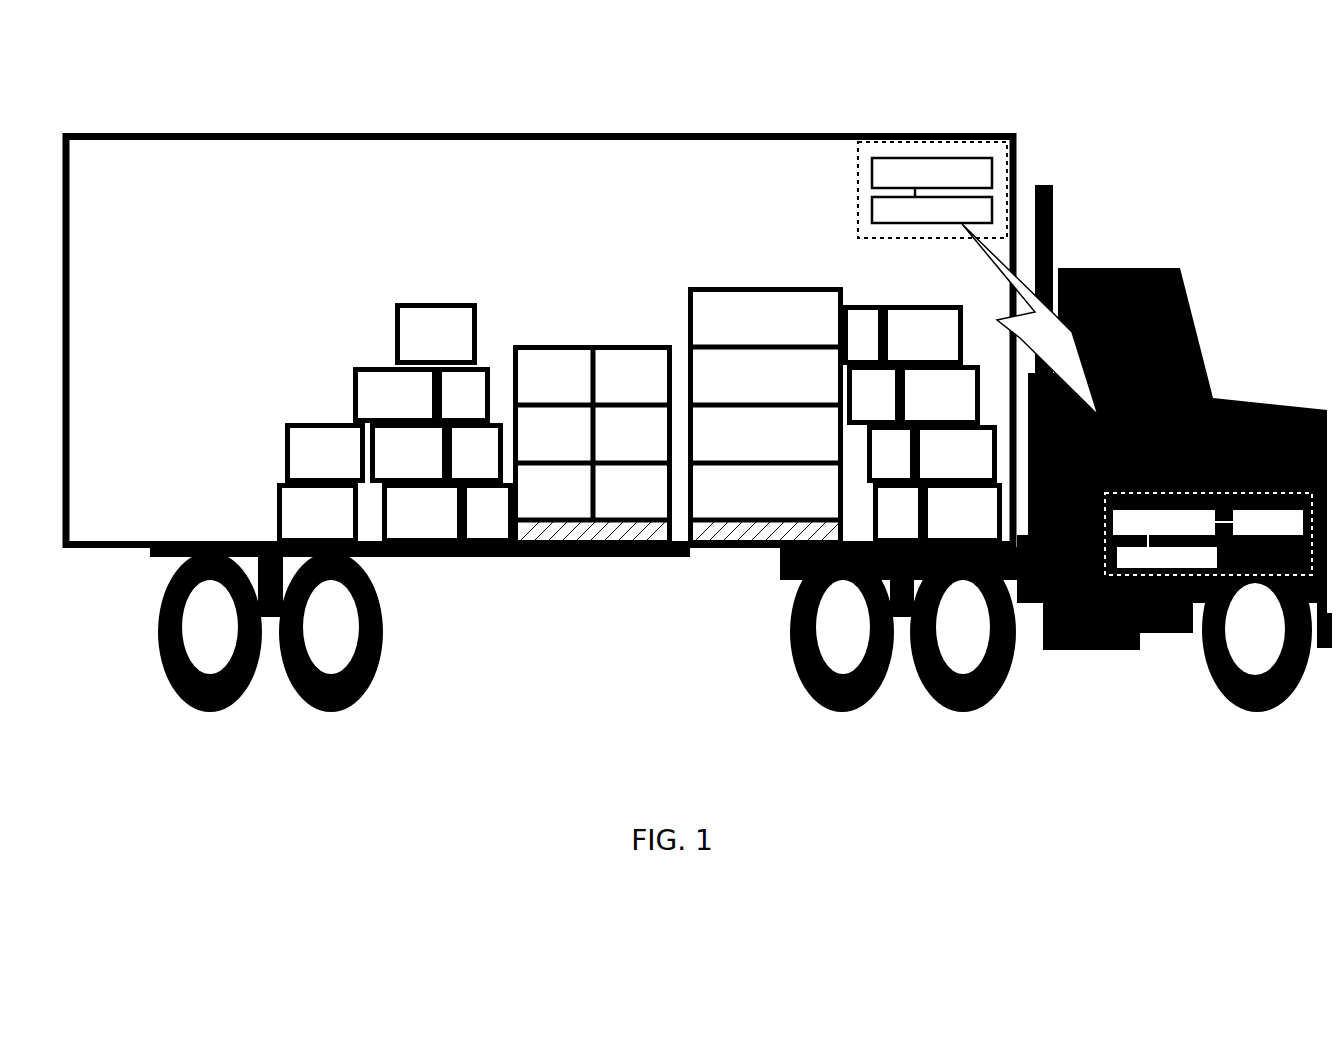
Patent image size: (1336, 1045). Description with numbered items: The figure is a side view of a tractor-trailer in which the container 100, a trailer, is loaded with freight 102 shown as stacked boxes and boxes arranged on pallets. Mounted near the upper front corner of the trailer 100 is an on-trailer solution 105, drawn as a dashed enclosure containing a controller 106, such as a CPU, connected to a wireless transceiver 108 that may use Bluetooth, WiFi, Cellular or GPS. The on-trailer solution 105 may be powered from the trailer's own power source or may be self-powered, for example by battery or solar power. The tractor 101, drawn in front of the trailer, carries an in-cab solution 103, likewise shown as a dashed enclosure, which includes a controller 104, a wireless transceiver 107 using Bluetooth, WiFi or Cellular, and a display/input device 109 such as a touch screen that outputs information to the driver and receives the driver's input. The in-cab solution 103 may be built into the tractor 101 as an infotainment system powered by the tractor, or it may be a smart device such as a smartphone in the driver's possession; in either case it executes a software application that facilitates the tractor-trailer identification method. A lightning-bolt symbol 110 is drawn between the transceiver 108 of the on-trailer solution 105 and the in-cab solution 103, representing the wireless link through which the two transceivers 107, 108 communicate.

The container 100 is at (527, 133).
The tractor 101 is at (1184, 268).
The freight 102 is at (345, 413).
The in-cab solution 103 is at (1208, 494).
The controller 104 is at (1118, 505).
The on-trailer solution 105 is at (968, 142).
The controller 106 is at (870, 156).
The wireless transceiver 107 is at (1113, 546).
The wireless transceiver 108 is at (868, 196).
The display/input device 109 is at (1290, 508).
The wireless communication link 110 is at (1000, 277).